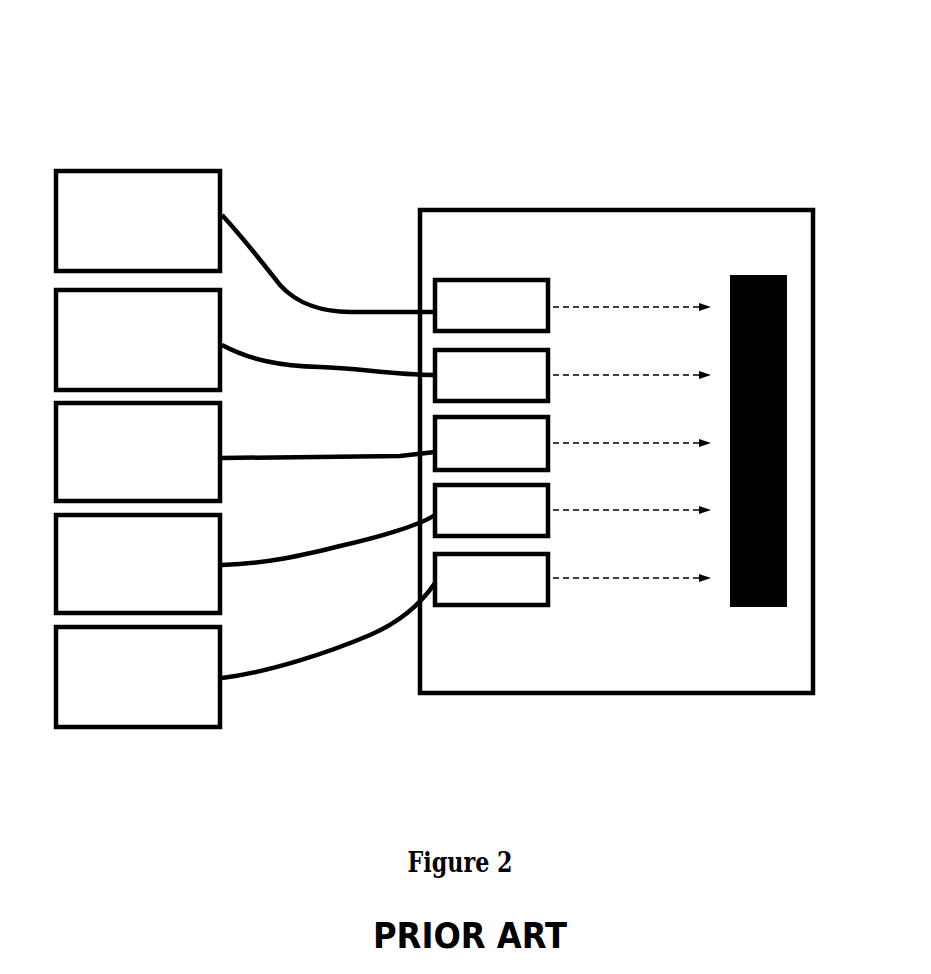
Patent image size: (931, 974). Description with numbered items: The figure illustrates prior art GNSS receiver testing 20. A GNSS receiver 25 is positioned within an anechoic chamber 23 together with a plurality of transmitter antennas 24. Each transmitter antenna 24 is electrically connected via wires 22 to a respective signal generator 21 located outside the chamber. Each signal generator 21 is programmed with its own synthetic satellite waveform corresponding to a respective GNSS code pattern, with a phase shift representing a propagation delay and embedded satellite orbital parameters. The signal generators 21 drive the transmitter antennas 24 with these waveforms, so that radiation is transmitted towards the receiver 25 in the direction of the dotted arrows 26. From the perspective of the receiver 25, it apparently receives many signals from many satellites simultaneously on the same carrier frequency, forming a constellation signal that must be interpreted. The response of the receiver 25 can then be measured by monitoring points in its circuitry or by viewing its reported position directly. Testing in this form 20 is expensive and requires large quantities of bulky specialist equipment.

The prior art GNSS receiver testing 20 is at (333, 133).
The signal generators 21 is at (130, 167).
The wires 22 is at (284, 667).
The anechoic chamber 23 is at (631, 207).
The transmitter antennas 24 is at (515, 609).
The GNSS receiver 25 is at (758, 274).
The dotted arrows 26 is at (632, 579).